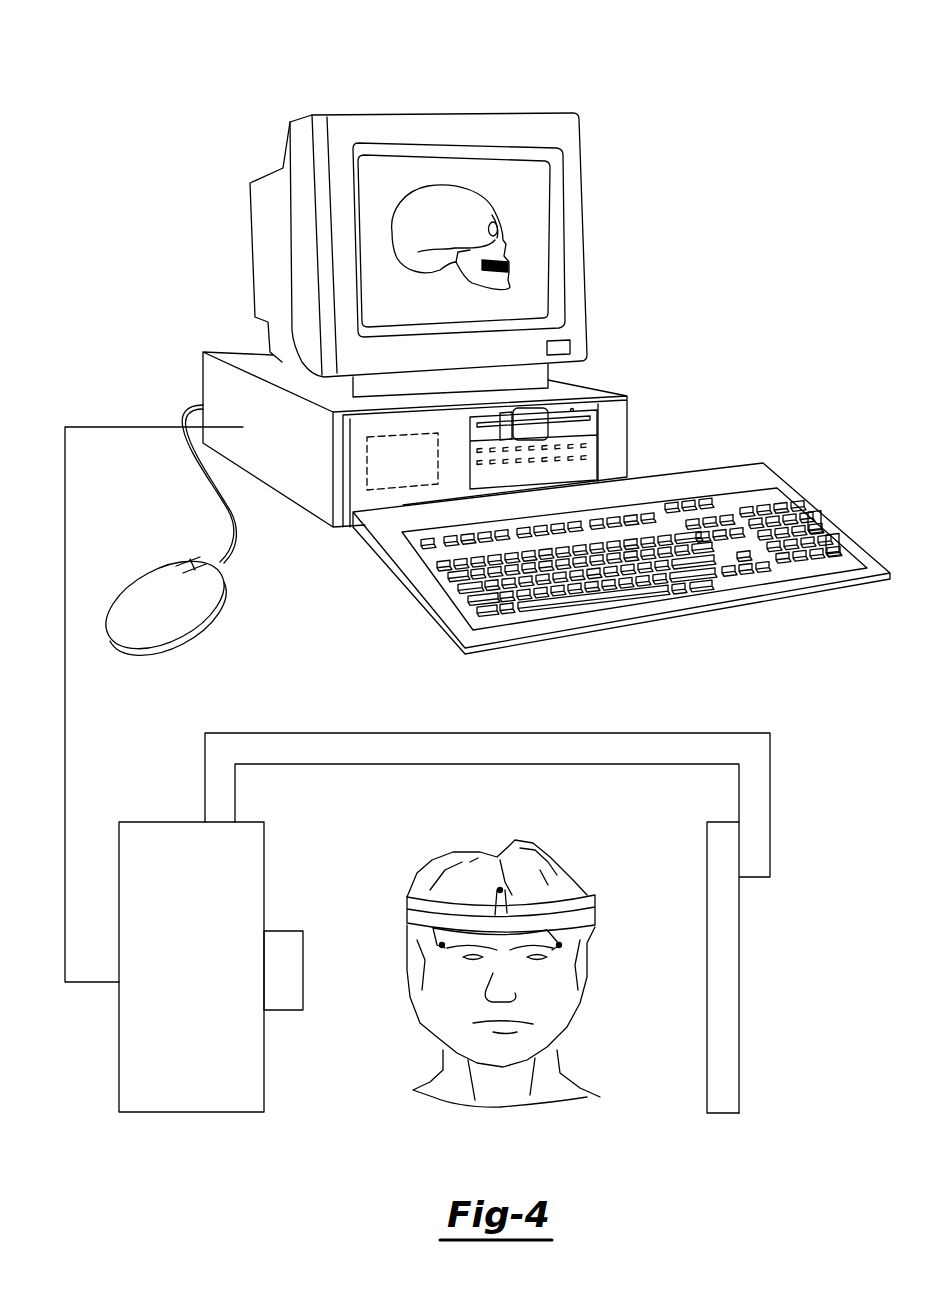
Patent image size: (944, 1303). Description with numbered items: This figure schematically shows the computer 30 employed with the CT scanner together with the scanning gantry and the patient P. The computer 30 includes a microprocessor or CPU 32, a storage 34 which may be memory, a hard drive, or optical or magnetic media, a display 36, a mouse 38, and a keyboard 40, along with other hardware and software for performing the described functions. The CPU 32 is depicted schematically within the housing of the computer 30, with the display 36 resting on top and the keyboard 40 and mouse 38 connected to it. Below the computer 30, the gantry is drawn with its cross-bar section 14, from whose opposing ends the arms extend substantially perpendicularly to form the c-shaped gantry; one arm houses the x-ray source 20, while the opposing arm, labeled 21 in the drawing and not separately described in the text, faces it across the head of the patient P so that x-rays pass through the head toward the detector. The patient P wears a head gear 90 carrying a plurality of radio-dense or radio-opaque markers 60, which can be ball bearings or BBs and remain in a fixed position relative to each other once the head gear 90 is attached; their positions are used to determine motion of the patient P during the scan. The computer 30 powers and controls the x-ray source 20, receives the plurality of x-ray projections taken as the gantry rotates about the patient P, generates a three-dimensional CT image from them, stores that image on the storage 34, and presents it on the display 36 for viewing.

The computer 30 is at (563, 70).
The display 36 is at (584, 270).
The microprocessor or CPU 32 is at (627, 423).
The storage 34 is at (385, 463).
The keyboard 40 is at (762, 468).
The mouse 38 is at (141, 580).
The cross-bar section 14 is at (334, 733).
The x-ray source 20 is at (203, 966).
The detector 21 is at (737, 992).
The head gear 90 is at (414, 912).
The markers 60 is at (498, 889).
The patient P is at (505, 1097).